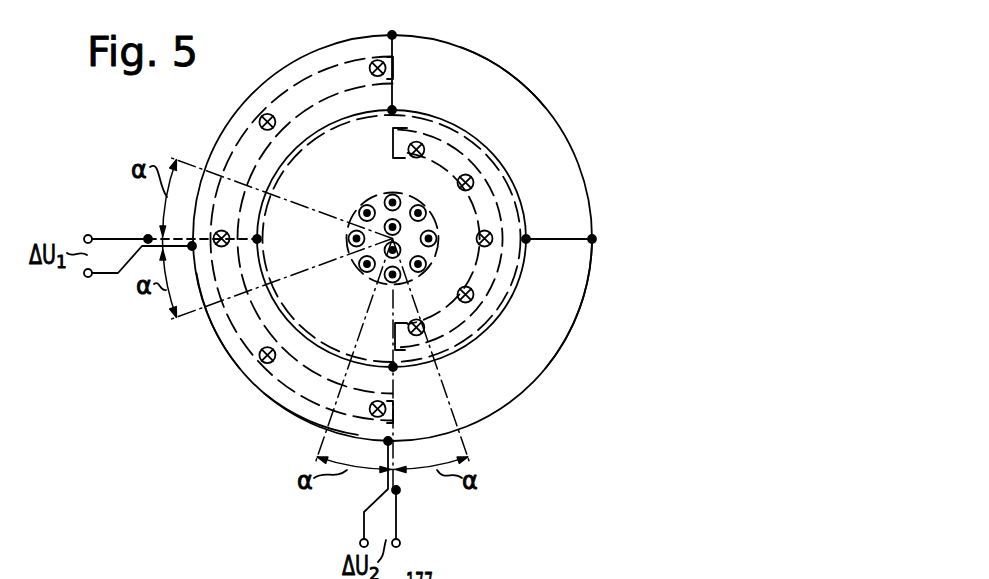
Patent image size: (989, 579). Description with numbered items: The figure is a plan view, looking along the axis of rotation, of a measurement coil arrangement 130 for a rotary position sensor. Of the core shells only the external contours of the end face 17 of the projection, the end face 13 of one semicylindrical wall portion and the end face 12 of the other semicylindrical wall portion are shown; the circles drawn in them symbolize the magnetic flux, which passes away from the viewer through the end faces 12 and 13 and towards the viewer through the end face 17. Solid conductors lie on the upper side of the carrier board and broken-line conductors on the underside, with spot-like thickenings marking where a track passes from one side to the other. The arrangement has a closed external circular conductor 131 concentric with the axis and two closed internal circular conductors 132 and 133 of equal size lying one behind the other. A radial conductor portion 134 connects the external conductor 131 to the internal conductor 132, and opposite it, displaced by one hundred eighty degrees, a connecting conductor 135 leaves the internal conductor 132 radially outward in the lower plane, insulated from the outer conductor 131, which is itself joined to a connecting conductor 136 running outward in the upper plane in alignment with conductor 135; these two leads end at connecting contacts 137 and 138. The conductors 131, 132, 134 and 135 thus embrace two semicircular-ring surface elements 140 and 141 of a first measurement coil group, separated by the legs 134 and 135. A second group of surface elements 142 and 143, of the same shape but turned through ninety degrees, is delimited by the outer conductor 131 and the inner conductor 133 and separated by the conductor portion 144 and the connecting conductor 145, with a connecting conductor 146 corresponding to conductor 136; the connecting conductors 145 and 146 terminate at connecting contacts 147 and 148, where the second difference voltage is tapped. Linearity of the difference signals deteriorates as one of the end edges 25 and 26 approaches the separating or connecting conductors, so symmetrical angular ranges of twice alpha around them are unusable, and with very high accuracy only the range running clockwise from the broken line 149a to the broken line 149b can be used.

The end face of the semicylindrical wall portion 12 is at (268, 395).
The end face of the semicylindrical wall portion 13 is at (395, 146).
The end face of the projection 17 is at (378, 203).
The end edge 25 is at (400, 410).
The end edge 26 is at (398, 70).
The sensor arrangement 130 is at (613, 155).
The external circular conductor 131 is at (553, 117).
The internal circular conductor 132 is at (456, 360).
The internal circular conductor 133 is at (312, 333).
The radially extending conductor portion 134 is at (550, 237).
The connecting conductor 135 is at (147, 235).
The connecting conductor 136 is at (118, 278).
The connecting contact 137 is at (88, 235).
The connecting contact 138 is at (88, 277).
The surface element 140 is at (493, 87).
The surface element 141 is at (545, 352).
The surface element 142 is at (572, 320).
The surface element 143 is at (302, 63).
The conductor portion 144 is at (397, 37).
The connecting conductor 145 is at (399, 490).
The connecting conductor 146 is at (385, 486).
The connecting contact 147 is at (403, 543).
The connecting contact 148 is at (358, 542).
The broken line 149a is at (325, 440).
The broken line 149b is at (210, 340).